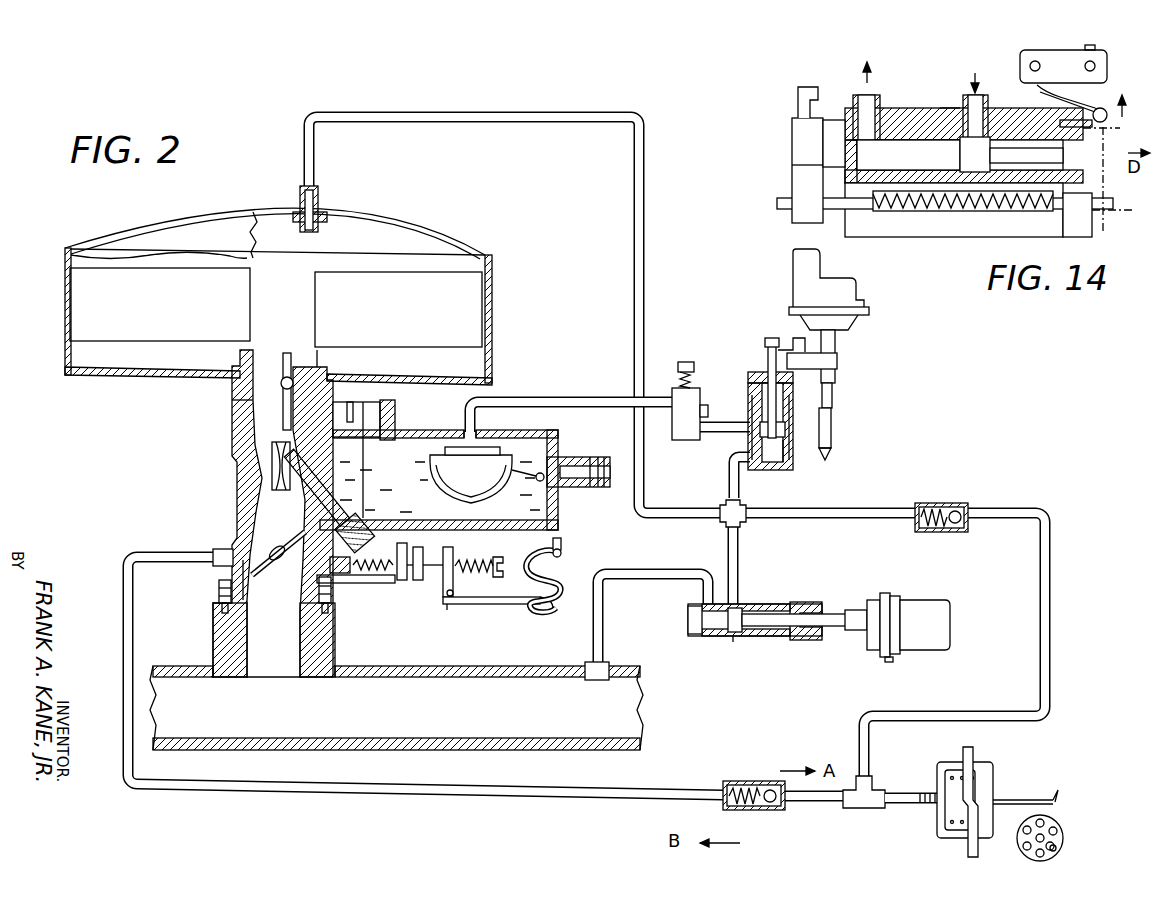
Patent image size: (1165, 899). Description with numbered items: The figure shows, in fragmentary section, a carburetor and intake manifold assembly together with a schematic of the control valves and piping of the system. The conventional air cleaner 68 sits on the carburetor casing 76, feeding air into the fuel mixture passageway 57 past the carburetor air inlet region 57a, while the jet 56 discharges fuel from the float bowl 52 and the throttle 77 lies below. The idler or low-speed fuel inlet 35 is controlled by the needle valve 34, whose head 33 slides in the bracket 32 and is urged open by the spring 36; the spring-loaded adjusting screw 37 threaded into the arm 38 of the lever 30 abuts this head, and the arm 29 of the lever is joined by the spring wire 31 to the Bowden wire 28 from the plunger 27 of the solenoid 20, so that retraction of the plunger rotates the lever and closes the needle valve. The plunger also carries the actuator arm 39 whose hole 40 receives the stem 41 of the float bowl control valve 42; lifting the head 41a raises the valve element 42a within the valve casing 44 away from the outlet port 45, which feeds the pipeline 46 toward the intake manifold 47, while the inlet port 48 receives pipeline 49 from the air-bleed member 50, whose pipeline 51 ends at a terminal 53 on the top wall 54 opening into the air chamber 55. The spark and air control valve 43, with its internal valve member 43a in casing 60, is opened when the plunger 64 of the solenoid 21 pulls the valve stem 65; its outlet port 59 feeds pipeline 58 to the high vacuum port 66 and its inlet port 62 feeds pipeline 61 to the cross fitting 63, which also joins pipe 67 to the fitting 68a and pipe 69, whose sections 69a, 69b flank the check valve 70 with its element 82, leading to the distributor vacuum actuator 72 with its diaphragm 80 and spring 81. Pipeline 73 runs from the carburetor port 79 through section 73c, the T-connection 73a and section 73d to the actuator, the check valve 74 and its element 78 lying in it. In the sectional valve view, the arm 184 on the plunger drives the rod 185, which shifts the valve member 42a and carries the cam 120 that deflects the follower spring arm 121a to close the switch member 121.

In FIG. 2, the solenoid 20 is at (793, 273).
In FIG. 2, the solenoid 21 is at (930, 600).
In FIG. 2, the plunger 27 is at (835, 343).
In FIG. 2, the Bowden wire 28 is at (563, 546).
In FIG. 2, the arm 29 is at (505, 606).
In FIG. 2, the lever 30 is at (455, 615).
In FIG. 2, the spring wire 31 is at (565, 574).
In FIG. 2, the bracket 32 is at (372, 595).
In FIG. 2, the head 33 is at (410, 556).
In FIG. 2, the needle valve 34 is at (340, 578).
In FIG. 2, the idler fuel inlet 35 is at (318, 566).
In FIG. 2, the spring 36 is at (375, 582).
In FIG. 2, the adjusting screw 37 is at (447, 590).
In FIG. 2, the arm 38 is at (456, 556).
In FIG. 2, the actuator arm 39 is at (837, 362).
In FIG. 2, the hole 40 is at (760, 373).
In FIG. 2, the stem 41 is at (783, 408).
In FIG. 2, the head 41a is at (772, 338).
In FIG. 2, the float bowl control valve 42 is at (752, 383).
In FIG. 14, the float bowl control valve 42 is at (943, 105).
In FIG. 2, the valve element 42a is at (797, 450).
In FIG. 14, the valve element 42a is at (960, 154).
In FIG. 2, the spark and air control valve 43 is at (803, 603).
In FIG. 2, the internal valve member 43a is at (740, 636).
In FIG. 2, the valve casing 44 is at (750, 404).
In FIG. 14, the valve casing 44 is at (910, 118).
In FIG. 2, the outlet port 45 is at (768, 462).
In FIG. 14, the outlet port 45 is at (851, 96).
In FIG. 2, the pipeline 46 is at (728, 482).
In FIG. 2, the intake manifold 47 is at (430, 748).
In FIG. 2, the inlet port 48 is at (752, 423).
In FIG. 14, the inlet port 48 is at (990, 98).
In FIG. 2, the pipeline 49 is at (710, 435).
In FIG. 2, the air-bleed member 50 is at (672, 430).
In FIG. 2, the pipeline 51 is at (574, 402).
In FIG. 2, the float bowl 52 is at (560, 458).
In FIG. 2, the terminal 53 is at (478, 428).
In FIG. 2, the top wall 54 is at (392, 437).
In FIG. 2, the air chamber 55 is at (436, 446).
In FIG. 2, the jet 56 is at (276, 446).
In FIG. 2, the fuel mixture passageway 57 is at (262, 440).
In FIG. 2, the carburetor air inlet region 57a is at (232, 404).
In FIG. 2, the pipeline 58 is at (592, 630).
In FIG. 2, the outlet port 59 is at (690, 615).
In FIG. 2, the casing 60 is at (706, 636).
In FIG. 2, the pipeline 61 is at (740, 542).
In FIG. 2, the inlet port 62 is at (745, 610).
In FIG. 2, the cross fitting 63 is at (718, 525).
In FIG. 2, the plunger 64 is at (858, 610).
In FIG. 2, the valve stem 65 is at (826, 616).
In FIG. 2, the high vacuum port 66 is at (609, 666).
In FIG. 2, the pipe 67 is at (648, 527).
In FIG. 2, the air cleaner 68 is at (432, 222).
In FIG. 2, the fitting 68a is at (322, 222).
In FIG. 2, the pipe 69 is at (962, 505).
In FIG. 2, the pipe section 69a is at (868, 498).
In FIG. 2, the pipe section 69b is at (1040, 512).
In FIG. 2, the check valve 70 is at (925, 532).
In FIG. 2, the distributor vacuum actuator 72 is at (1000, 770).
In FIG. 2, the pipeline 73 is at (722, 783).
In FIG. 2, the T-connection 73a is at (865, 810).
In FIG. 2, the pipe section 73c is at (656, 800).
In FIG. 2, the pipe section 73d is at (825, 806).
In FIG. 2, the check valve 74 is at (748, 808).
In FIG. 2, the carburetor casing 76 is at (232, 503).
In FIG. 2, the throttle 77 is at (258, 592).
In FIG. 2, the valve element 78 is at (768, 810).
In FIG. 2, the carburetor port 79 is at (215, 553).
In FIG. 2, the diaphragm 80 is at (996, 802).
In FIG. 2, the spring 81 is at (948, 762).
In FIG. 2, the check valve element 82 is at (957, 533).
In FIG. 14, the cam 120 is at (1060, 123).
In FIG. 14, the switch member 121 is at (1108, 62).
In FIG. 14, the follower spring arm 121a is at (1062, 100).
In FIG. 14, the arm 184 is at (803, 170).
In FIG. 14, the rod 185 is at (786, 199).